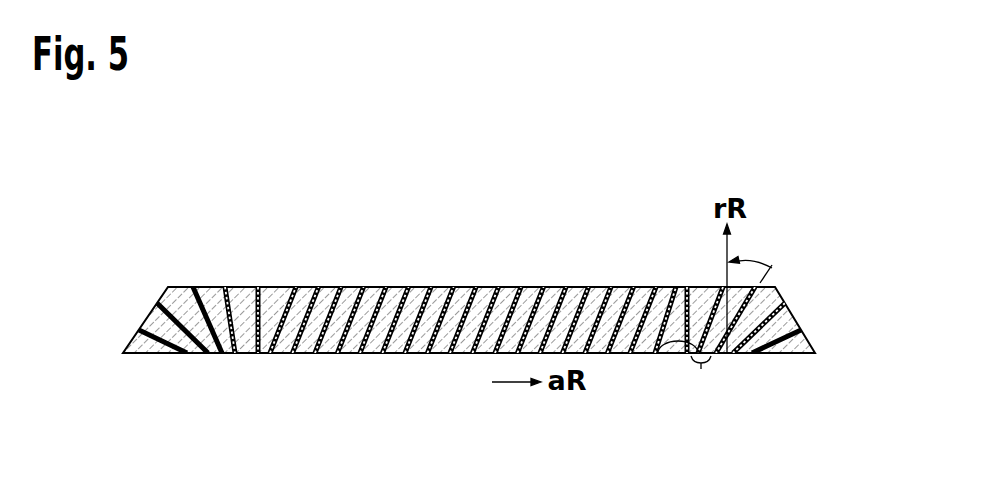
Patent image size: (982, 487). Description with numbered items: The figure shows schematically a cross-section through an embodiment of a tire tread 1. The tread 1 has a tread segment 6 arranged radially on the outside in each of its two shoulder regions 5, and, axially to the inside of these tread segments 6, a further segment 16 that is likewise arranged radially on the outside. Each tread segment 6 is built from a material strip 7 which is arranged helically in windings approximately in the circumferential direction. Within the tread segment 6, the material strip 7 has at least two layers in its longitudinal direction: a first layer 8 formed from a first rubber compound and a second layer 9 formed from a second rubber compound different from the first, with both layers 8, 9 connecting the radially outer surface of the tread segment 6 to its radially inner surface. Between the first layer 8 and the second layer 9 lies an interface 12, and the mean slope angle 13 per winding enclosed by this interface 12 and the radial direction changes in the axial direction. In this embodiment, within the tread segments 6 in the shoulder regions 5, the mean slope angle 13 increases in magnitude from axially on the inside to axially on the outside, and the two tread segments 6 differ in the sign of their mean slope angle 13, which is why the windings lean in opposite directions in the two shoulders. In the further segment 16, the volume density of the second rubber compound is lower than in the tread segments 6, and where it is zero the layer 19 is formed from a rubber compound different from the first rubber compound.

The tread 1 is at (150, 259).
The shoulder region 5 is at (173, 266).
The tread segment 6 is at (243, 265).
The material strip 7 is at (701, 369).
The first layer 8 is at (733, 353).
The second layer 9 is at (657, 353).
The interface 12 is at (778, 286).
The mean slope angle 13 is at (749, 262).
The further segment 16 is at (497, 265).
The layer 19 is at (374, 286).